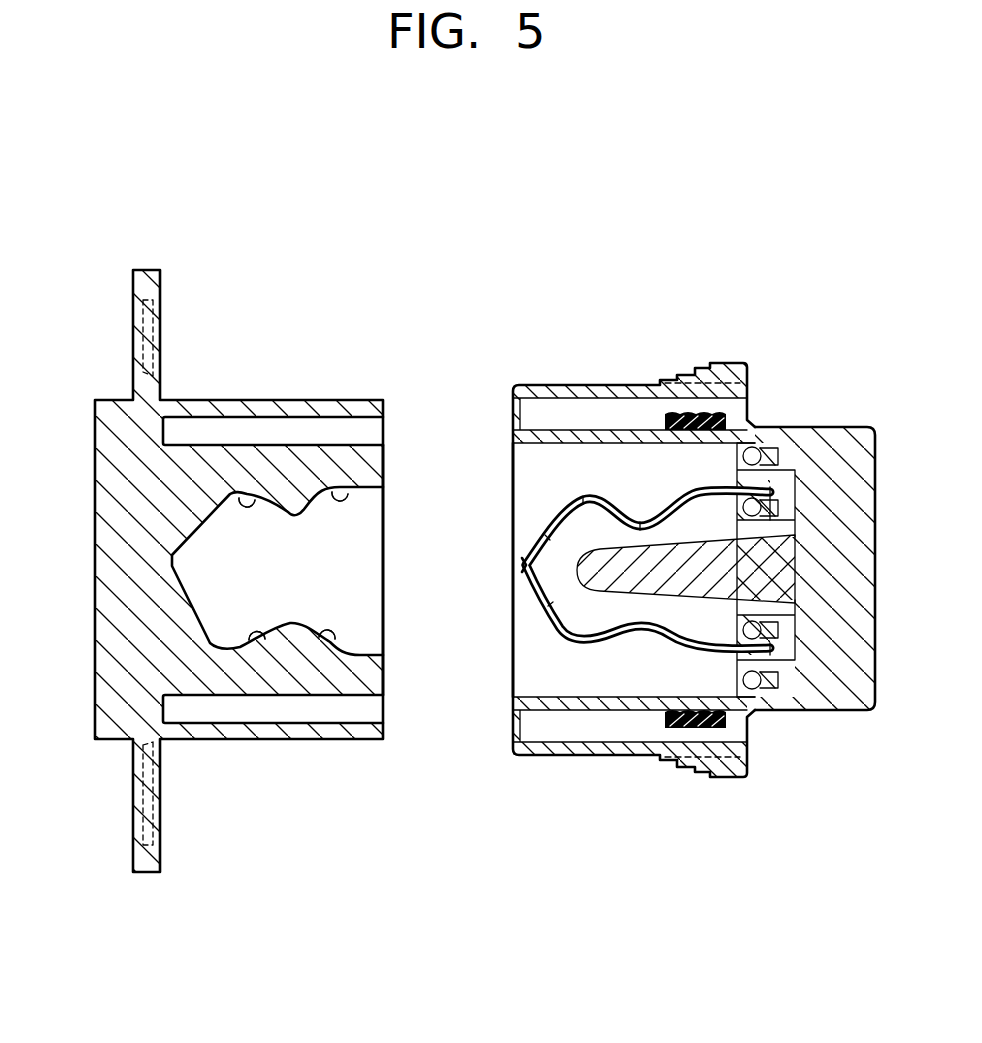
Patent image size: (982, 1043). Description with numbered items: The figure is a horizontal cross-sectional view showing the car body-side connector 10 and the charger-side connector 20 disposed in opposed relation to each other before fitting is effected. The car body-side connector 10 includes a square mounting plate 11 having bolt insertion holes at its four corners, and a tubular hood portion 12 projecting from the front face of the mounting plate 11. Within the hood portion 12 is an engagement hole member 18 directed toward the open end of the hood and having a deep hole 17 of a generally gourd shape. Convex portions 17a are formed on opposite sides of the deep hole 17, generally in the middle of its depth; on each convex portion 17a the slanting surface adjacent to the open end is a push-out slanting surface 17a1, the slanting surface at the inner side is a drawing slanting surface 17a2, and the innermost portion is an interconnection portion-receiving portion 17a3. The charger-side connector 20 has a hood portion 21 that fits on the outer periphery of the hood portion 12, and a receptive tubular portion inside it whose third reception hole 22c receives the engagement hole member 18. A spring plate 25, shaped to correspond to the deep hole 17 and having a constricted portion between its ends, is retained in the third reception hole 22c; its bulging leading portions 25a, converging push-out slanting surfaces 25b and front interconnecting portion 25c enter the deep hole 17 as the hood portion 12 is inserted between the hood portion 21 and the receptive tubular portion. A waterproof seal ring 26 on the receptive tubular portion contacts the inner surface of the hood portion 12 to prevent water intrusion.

The car body-side connector 10 is at (93, 521).
The mounting plate 11 is at (160, 298).
The hood portion 12 is at (330, 412).
The deep hole 17 is at (375, 600).
The convex portion 17a is at (287, 495).
The push-out slanting surface 17a1 is at (346, 490).
The drawing slanting surface 17a2 is at (244, 492).
The interconnection portion-receiving portion 17a3 is at (194, 570).
The engagement hole member 18 is at (380, 472).
The charger-side connector 20 is at (802, 402).
The hood portion 21 is at (603, 385).
The third reception hole 22c is at (514, 682).
The spring plate 25 is at (703, 655).
The leading portion 25a is at (614, 508).
The push-out slanting surface 25b is at (553, 516).
The interconnecting portion 25c is at (523, 560).
The waterproof seal ring 26 is at (708, 413).